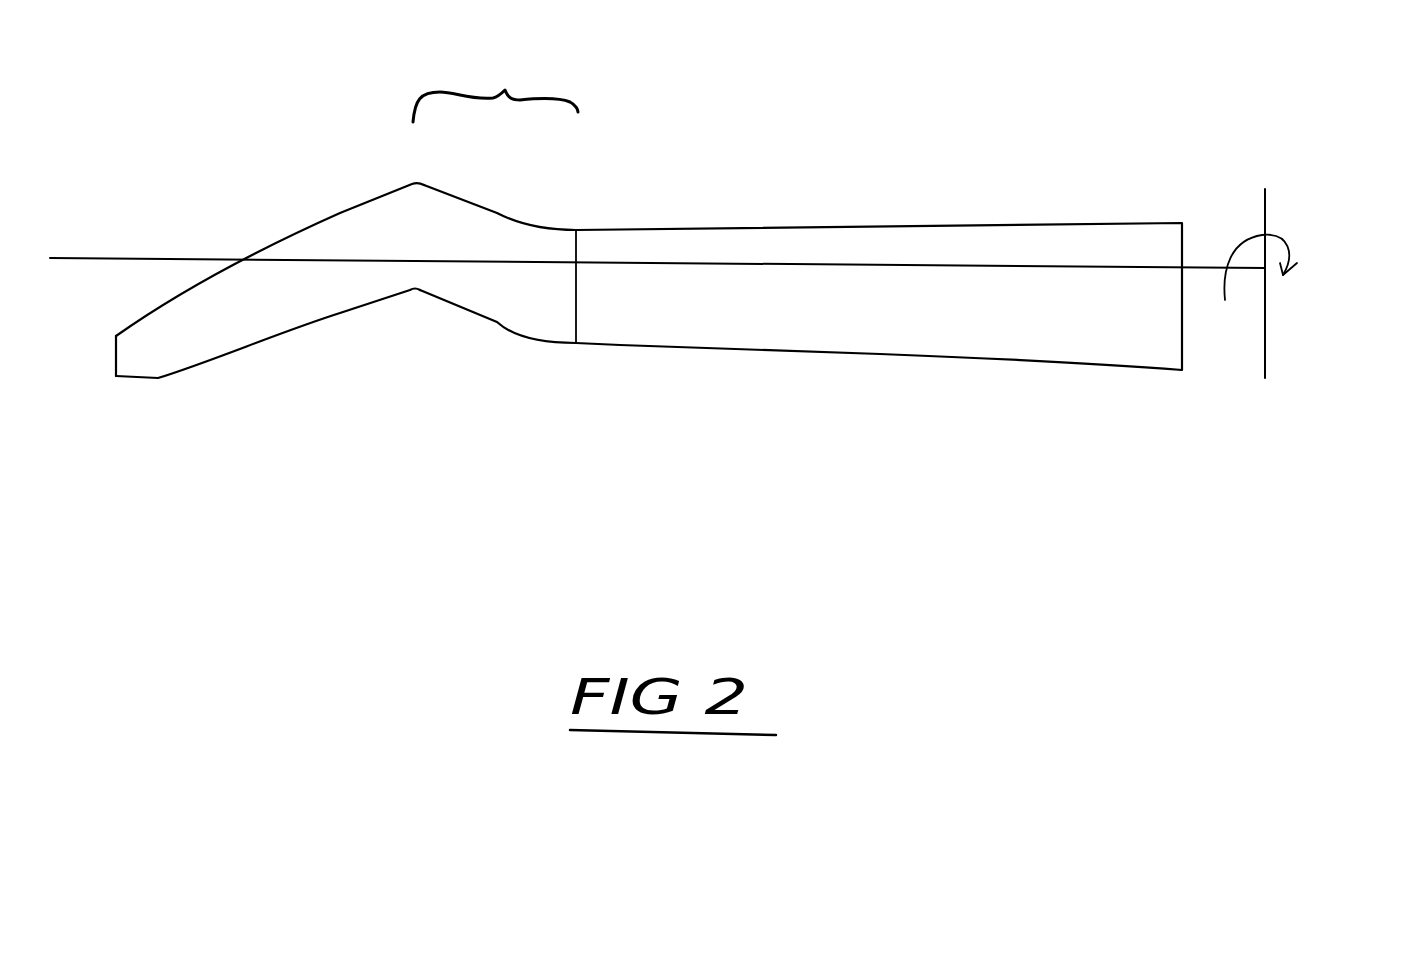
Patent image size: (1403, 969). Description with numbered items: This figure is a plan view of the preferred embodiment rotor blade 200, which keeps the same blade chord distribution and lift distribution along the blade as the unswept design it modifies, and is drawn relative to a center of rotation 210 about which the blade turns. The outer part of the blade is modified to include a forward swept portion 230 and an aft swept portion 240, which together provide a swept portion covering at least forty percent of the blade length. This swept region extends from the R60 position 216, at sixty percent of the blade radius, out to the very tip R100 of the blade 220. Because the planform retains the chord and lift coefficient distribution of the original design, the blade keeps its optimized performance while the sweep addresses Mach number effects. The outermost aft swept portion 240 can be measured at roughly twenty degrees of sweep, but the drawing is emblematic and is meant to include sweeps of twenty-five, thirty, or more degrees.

The blade 200 is at (803, 227).
The center of rotation 210 is at (1237, 245).
The R60 position 216 is at (572, 417).
The tip R100 of the blade 220 is at (112, 442).
The forward swept portion 230 is at (495, 78).
The aft swept portion 240 is at (115, 108).